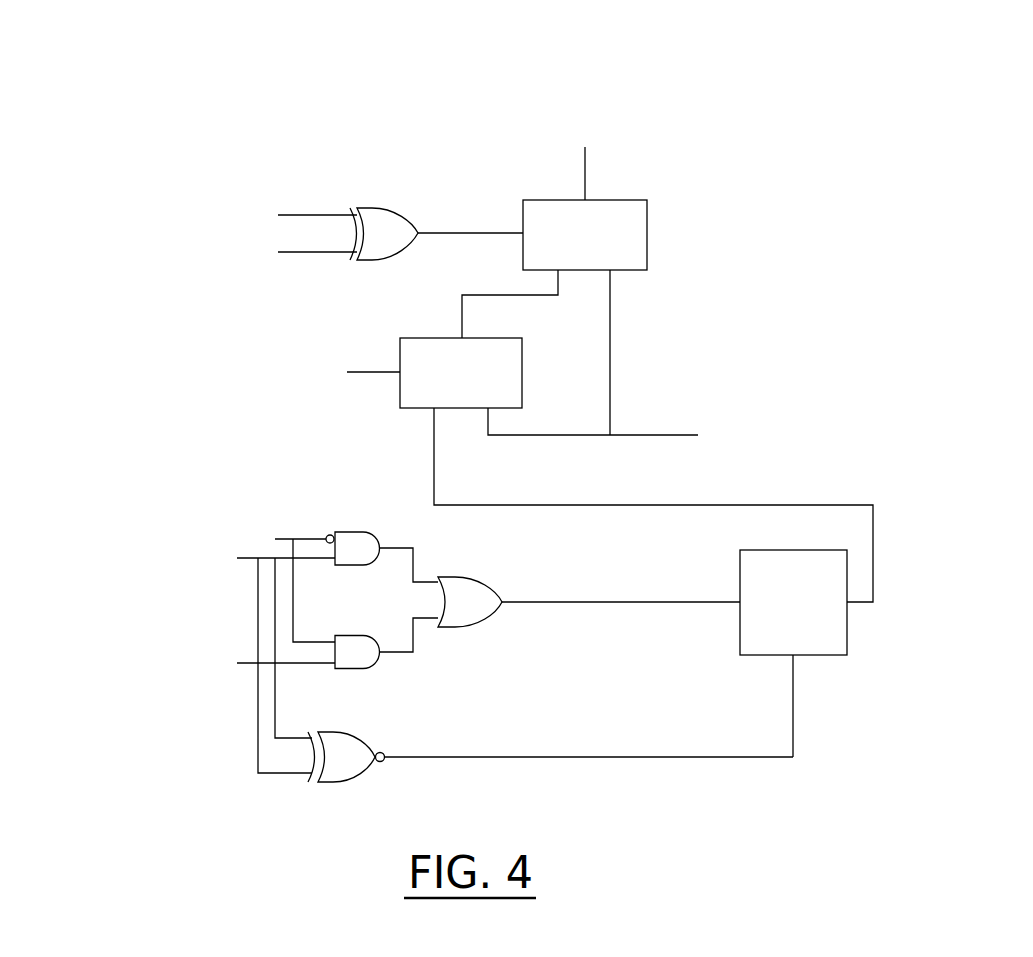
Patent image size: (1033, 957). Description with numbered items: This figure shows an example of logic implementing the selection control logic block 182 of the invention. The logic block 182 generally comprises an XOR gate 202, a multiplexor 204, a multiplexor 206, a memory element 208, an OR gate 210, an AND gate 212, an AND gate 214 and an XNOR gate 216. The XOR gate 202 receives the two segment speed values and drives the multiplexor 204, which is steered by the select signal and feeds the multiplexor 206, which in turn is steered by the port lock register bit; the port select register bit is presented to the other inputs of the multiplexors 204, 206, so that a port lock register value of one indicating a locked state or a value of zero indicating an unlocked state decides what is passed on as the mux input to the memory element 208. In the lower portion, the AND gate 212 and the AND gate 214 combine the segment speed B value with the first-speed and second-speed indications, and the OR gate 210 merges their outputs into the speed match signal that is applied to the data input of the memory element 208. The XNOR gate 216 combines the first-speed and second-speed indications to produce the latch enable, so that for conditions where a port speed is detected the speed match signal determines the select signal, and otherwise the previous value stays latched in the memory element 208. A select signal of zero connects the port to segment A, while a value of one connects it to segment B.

The selection control logic block 182 is at (371, 100).
The XOR gate 202 is at (397, 211).
The multiplexor 204 is at (557, 198).
The multiplexor 206 is at (440, 338).
The memory element 208 is at (771, 549).
The OR gate 210 is at (458, 577).
The AND gate 212 is at (353, 531).
The AND gate 214 is at (353, 635).
The XNOR gate 216 is at (335, 733).